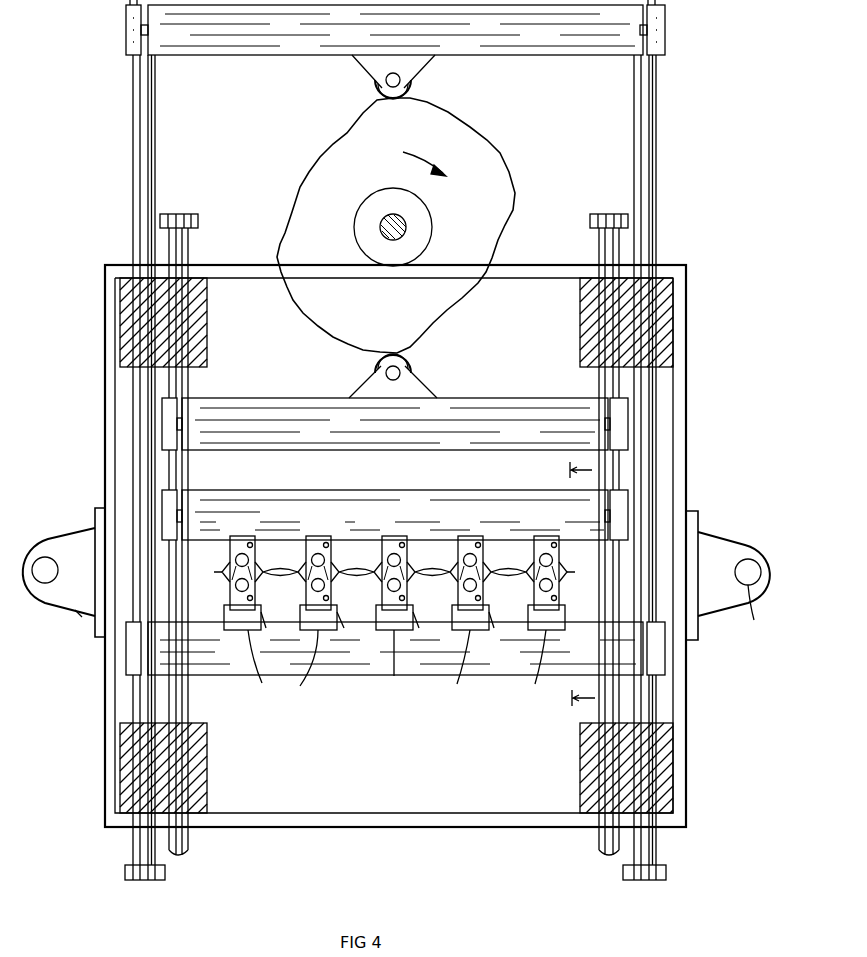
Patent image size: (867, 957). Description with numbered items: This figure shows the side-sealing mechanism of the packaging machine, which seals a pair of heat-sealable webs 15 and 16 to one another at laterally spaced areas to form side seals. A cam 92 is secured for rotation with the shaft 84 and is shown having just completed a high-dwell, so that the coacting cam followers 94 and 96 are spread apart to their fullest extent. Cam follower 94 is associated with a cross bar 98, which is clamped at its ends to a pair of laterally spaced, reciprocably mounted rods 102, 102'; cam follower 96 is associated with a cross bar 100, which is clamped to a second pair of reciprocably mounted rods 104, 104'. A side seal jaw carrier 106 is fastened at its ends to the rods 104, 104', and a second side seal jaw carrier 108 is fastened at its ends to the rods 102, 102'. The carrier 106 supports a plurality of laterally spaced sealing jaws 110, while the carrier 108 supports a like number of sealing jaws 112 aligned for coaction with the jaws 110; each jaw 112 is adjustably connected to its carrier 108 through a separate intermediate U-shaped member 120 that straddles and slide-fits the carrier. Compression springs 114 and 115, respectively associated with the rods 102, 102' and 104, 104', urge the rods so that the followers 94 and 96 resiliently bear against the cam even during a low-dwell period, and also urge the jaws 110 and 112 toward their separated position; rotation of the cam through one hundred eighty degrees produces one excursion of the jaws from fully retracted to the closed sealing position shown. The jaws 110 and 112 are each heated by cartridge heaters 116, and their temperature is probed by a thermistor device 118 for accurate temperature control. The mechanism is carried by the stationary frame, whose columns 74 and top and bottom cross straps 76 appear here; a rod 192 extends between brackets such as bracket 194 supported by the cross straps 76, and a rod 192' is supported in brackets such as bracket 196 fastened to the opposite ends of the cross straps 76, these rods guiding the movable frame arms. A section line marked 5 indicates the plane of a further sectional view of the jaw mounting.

The section line 5- 5 is at (582, 582).
The heat-sealable web 15 is at (293, 560).
The heat-sealable web 16 is at (390, 624).
The columns 74 is at (120, 294).
The cross straps 76 is at (227, 268).
The shaft 84 is at (405, 221).
The cam 92 is at (505, 160).
The cam follower 94 is at (413, 86).
The cam follower 96 is at (411, 371).
The cross bar 98 is at (547, 55).
The cross bar 100 is at (502, 402).
The reciprocably mounted rod 102 is at (162, 432).
The reciprocably mounted rod 102' is at (668, 432).
The reciprocably mounted rod 104 is at (200, 547).
The reciprocably mounted rod 104' is at (587, 547).
The side seal jaw carrier 106 is at (232, 490).
The side seal jaw carrier 108 is at (200, 663).
The sealing jaws 110 is at (247, 517).
The sealing jaws 112 is at (230, 589).
The compression spring 114 is at (160, 853).
The compression spring 115 is at (188, 240).
The cartridge heaters 116 is at (232, 563).
The thermistor device 118 is at (253, 545).
The intermediate U-shaped member 120 is at (408, 666).
The rod 192 is at (64, 572).
The rod 192' is at (770, 608).
The bracket 194 is at (80, 608).
The bracket 196 is at (722, 548).